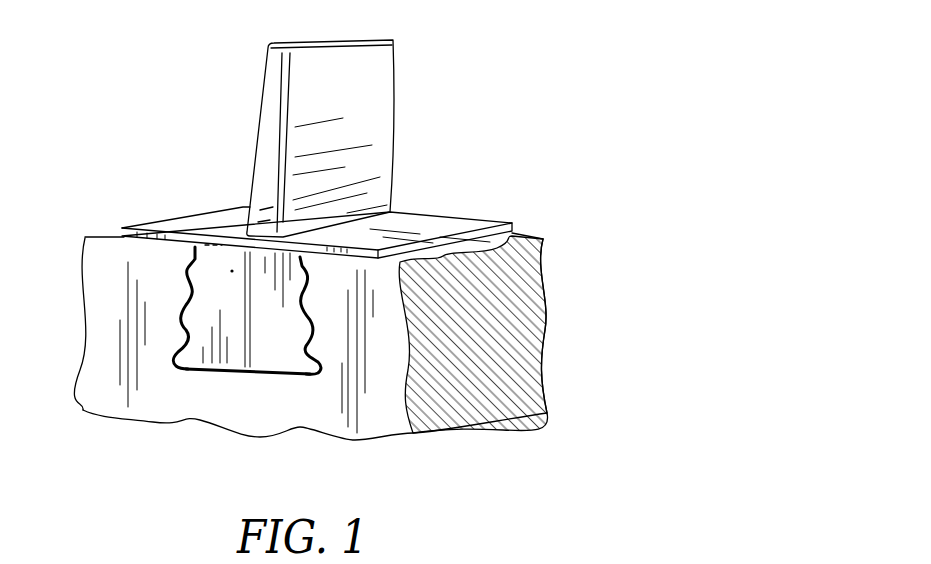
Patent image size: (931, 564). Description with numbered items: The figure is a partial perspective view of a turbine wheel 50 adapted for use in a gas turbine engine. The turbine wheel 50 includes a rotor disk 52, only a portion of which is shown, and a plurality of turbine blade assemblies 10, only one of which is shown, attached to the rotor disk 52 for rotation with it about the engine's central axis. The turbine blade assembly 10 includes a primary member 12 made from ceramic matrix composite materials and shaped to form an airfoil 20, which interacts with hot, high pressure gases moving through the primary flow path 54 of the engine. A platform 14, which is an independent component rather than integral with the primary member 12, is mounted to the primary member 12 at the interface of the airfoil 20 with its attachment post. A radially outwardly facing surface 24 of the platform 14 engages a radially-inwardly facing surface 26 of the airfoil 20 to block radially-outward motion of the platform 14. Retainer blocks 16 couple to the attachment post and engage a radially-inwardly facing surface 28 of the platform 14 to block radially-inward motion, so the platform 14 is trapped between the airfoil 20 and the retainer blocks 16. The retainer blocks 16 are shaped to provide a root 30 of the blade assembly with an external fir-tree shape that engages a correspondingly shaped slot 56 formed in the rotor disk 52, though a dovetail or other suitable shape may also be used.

The turbine blade assembly 10 is at (463, 110).
The primary member 12 is at (410, 80).
The platform 14 is at (480, 208).
The retainer blocks 16 is at (186, 378).
The airfoil 20 is at (248, 144).
The radially outwardly facing surface 24 is at (407, 223).
The radially-inwardly facing surface 26 is at (227, 242).
The radially-inwardly facing surface 28 is at (217, 247).
The root 30 is at (227, 436).
The turbine wheel 50 is at (396, 260).
The rotor disk 52 is at (561, 353).
The primary flow path 54 is at (181, 97).
The slot 56 is at (310, 372).